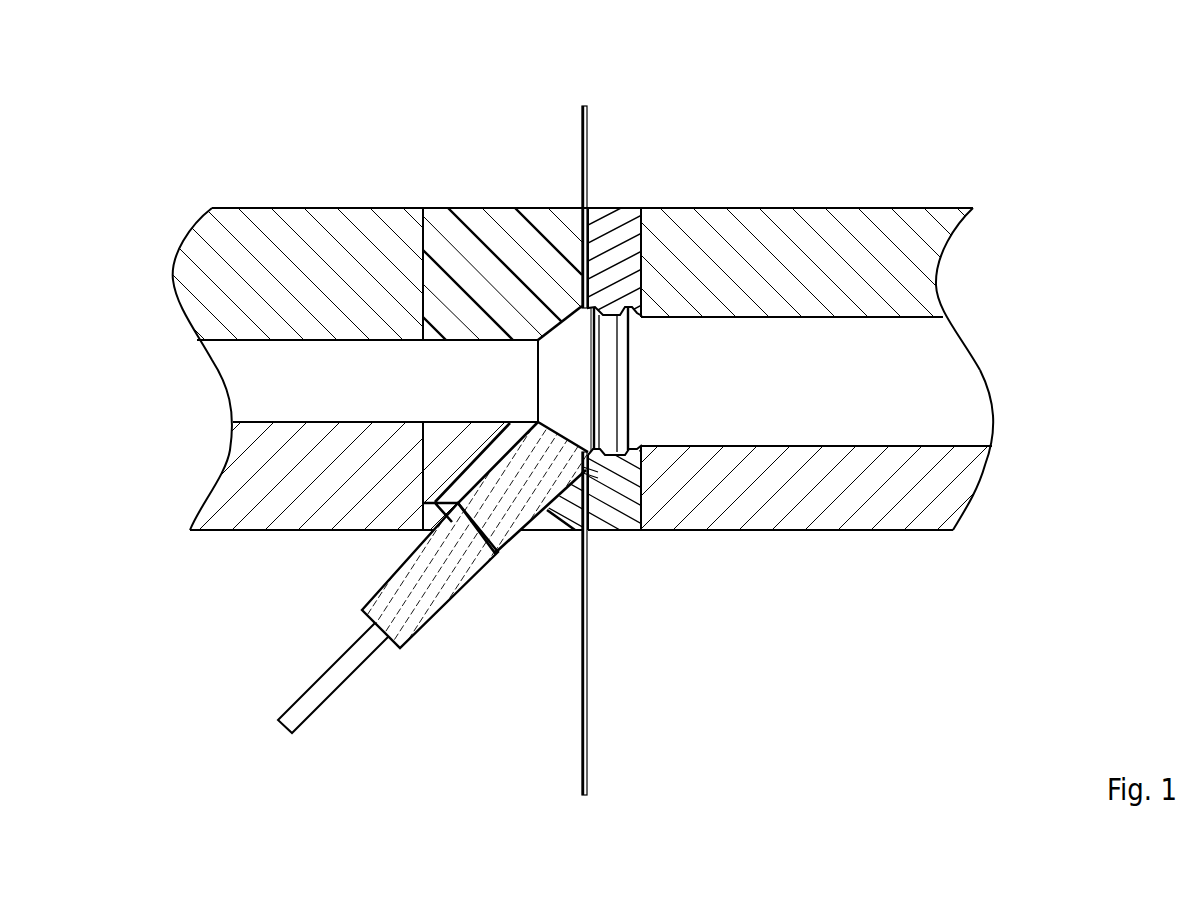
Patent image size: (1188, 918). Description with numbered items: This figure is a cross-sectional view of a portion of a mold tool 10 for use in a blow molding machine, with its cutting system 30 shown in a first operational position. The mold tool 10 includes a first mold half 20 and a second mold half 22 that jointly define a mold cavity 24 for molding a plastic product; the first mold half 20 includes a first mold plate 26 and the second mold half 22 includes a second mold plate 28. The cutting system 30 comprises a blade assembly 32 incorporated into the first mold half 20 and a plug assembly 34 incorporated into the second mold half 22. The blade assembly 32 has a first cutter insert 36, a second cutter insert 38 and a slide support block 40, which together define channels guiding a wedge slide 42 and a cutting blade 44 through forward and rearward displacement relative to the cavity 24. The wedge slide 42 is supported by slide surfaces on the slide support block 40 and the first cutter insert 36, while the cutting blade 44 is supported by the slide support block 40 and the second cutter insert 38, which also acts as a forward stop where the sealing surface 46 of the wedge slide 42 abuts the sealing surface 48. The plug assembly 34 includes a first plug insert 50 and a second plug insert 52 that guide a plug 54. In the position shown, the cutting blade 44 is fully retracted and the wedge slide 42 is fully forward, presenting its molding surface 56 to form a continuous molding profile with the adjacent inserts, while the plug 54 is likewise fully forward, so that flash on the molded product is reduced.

The mold tool 10 is at (649, 468).
The first mold half 20 is at (650, 497).
The second mold half 22 is at (643, 330).
The mold cavity 24 is at (703, 394).
The first mold plate 26 is at (828, 518).
The second mold plate 28 is at (818, 215).
The cutting system 30 is at (540, 611).
The blade assembly 32 is at (494, 581).
The plug assembly 34 is at (489, 169).
The first cutter insert 36 is at (440, 440).
The second cutter insert 38 is at (610, 522).
The slide support block 40 is at (548, 515).
The wedge slide 42 is at (530, 445).
The cutting blade 44 is at (580, 658).
The sealing surface 46 is at (600, 447).
The sealing surface 48 is at (601, 481).
The first plug insert 50 is at (443, 218).
The second plug insert 52 is at (627, 212).
The plug 54 is at (547, 207).
The molding surface 56 is at (555, 428).